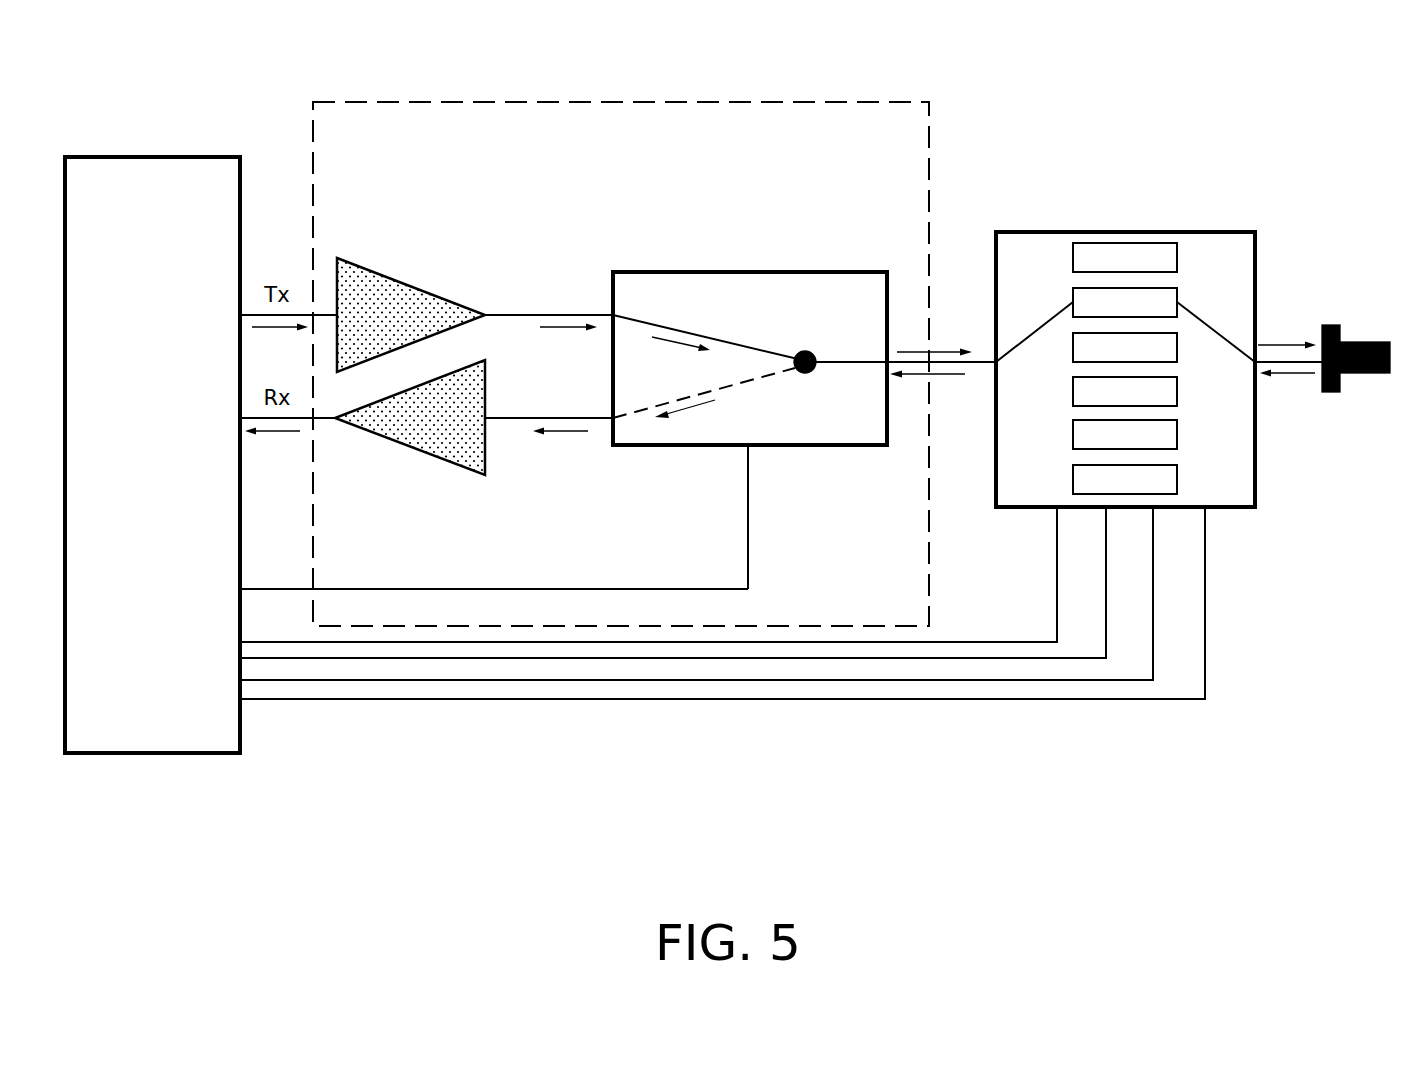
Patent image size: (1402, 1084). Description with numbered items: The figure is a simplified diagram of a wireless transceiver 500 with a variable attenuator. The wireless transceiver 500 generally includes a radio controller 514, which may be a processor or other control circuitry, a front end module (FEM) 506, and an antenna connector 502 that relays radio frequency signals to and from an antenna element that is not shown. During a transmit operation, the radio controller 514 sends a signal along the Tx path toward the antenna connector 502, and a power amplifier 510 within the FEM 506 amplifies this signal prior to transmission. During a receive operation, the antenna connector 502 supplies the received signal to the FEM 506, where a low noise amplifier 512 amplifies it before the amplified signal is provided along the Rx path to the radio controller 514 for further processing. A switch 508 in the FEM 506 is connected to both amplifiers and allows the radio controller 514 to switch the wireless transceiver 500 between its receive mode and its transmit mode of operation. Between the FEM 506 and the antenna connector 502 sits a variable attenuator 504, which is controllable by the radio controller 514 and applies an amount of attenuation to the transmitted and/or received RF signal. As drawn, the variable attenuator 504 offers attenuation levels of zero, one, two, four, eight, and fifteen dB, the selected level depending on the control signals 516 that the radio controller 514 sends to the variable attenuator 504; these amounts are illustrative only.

The wireless transceiver 500 is at (1292, 88).
The antenna connector 502 is at (1390, 340).
The variable attenuator 504 is at (1128, 232).
The front end module (FEM) 506 is at (793, 141).
The switch 508 is at (800, 330).
The power amplifier 510 is at (410, 283).
The low noise amplifier 512 is at (408, 447).
The radio controller 514 is at (135, 494).
The control signals 516 is at (722, 626).